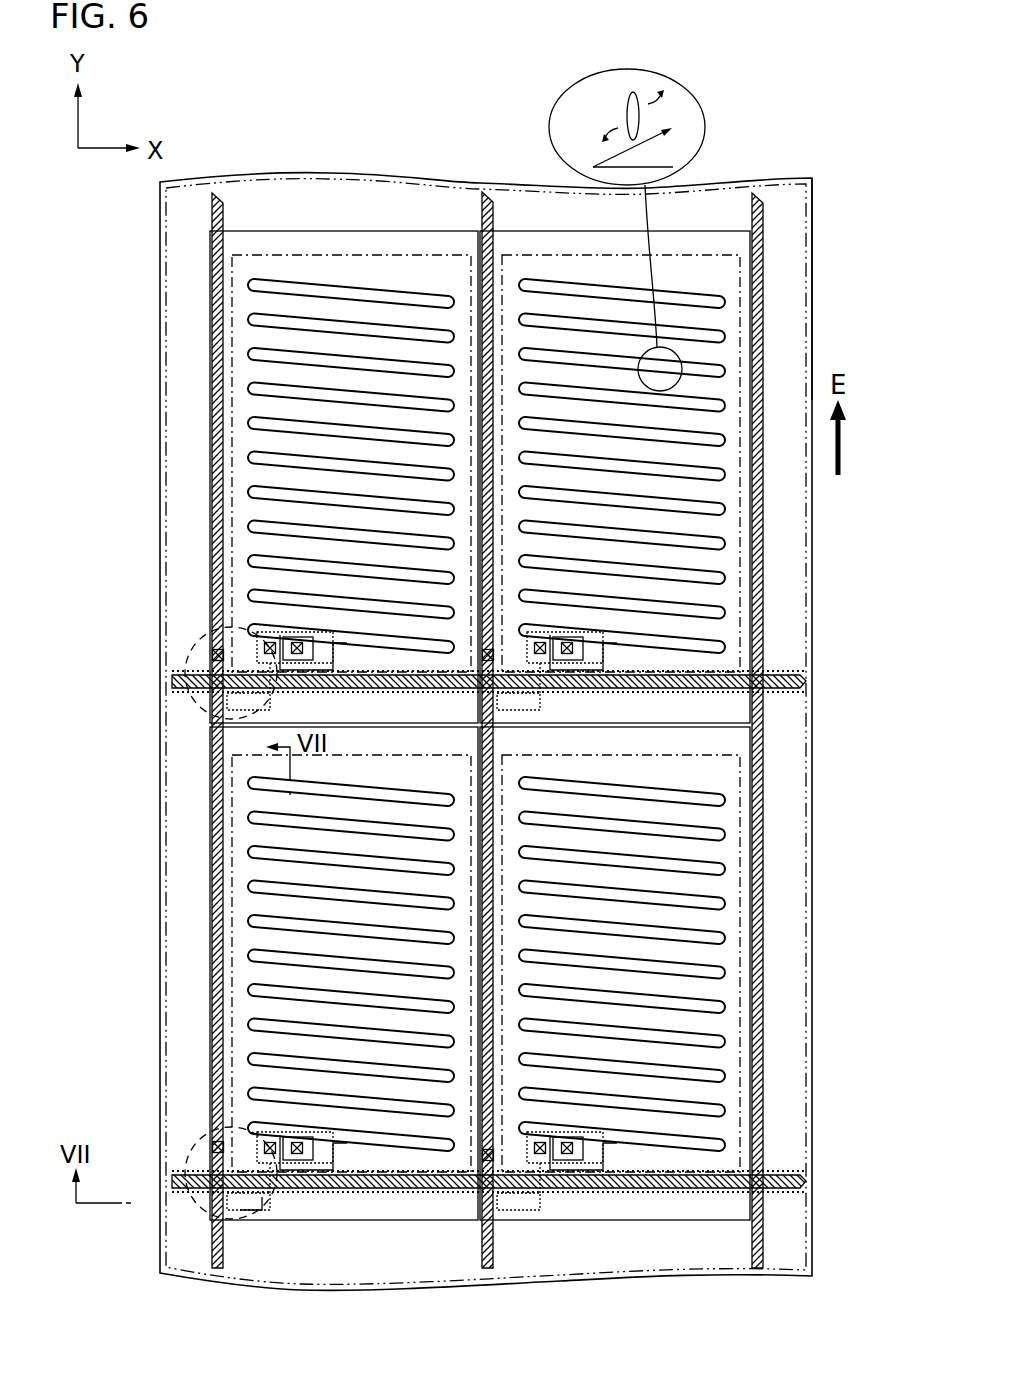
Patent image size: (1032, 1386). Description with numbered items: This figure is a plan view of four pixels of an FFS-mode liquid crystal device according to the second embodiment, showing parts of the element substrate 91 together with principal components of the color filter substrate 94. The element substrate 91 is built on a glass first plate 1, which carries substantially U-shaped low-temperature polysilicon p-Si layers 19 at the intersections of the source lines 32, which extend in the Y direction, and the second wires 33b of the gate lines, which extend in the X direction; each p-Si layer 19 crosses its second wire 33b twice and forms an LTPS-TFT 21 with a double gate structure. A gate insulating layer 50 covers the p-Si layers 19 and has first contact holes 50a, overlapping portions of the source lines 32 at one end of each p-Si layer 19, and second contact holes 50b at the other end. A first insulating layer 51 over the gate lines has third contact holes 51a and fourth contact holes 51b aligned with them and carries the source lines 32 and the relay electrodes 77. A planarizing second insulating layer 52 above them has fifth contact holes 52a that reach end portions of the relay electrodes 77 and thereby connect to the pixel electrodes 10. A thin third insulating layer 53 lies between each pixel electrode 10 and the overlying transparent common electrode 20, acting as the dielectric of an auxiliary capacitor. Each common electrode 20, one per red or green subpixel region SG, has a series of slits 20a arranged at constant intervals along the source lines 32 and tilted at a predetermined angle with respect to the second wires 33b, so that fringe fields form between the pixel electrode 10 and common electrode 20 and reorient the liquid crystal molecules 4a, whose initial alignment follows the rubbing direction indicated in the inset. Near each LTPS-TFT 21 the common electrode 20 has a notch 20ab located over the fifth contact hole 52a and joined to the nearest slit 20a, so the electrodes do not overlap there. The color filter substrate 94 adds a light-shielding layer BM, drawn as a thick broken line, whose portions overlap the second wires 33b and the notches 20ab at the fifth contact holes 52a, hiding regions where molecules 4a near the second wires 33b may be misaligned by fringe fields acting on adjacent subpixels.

The first plate 1 is at (512, 708).
The gate insulating layer 50 is at (512, 708).
The first insulating layer 51 is at (512, 708).
The second insulating layer 52 is at (512, 708).
The third insulating layer 53 is at (765, 157).
The liquid crystal molecule 4a is at (627, 110).
The pixel electrode 10 is at (403, 254).
The subpixel region SG is at (338, 254).
The common electrode 20 is at (520, 231).
The slit 20a is at (258, 392).
The notch 20ab is at (616, 1156).
The LTPS-TFT 21 is at (188, 643).
The source line 32 is at (487, 192).
The second wire 33b is at (783, 673).
The light-shielding layer BM is at (783, 695).
The element substrate 91 is at (822, 176).
The color filter substrate 94 is at (240, 183).
The p-Si layer 19 is at (247, 1212).
The fifth contact hole 52a is at (300, 1157).
The relay electrode 77 is at (317, 1150).
The first contact hole 50a is at (147, 1112).
The third contact hole 51a is at (213, 1128).
The second contact hole 50b is at (167, 1096).
The fourth contact hole 51b is at (270, 1145).